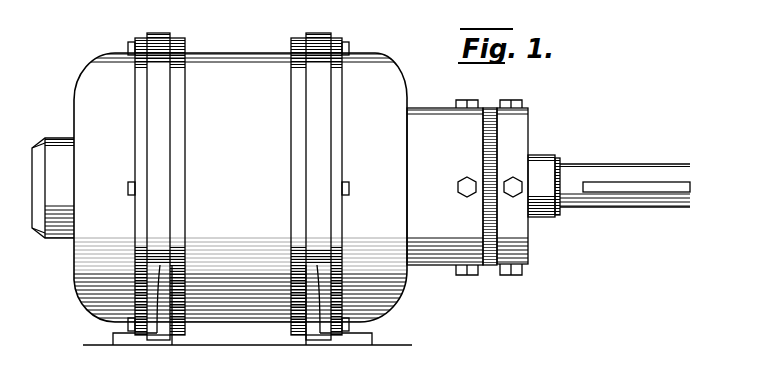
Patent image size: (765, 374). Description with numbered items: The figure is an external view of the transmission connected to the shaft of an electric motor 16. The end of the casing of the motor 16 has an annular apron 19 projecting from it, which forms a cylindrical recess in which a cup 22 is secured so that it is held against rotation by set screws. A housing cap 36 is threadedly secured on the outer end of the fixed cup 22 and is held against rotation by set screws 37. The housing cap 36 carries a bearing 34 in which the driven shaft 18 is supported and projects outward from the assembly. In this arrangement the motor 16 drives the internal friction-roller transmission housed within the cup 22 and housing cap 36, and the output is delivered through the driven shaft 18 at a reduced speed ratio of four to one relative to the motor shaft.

The electric motor 16 is at (242, 70).
The annular apron 19 is at (423, 121).
The cup 22 is at (493, 266).
The housing cap 36 is at (528, 243).
The set screws 37 is at (518, 100).
The bearing 34 is at (557, 162).
The driven shaft 18 is at (640, 170).